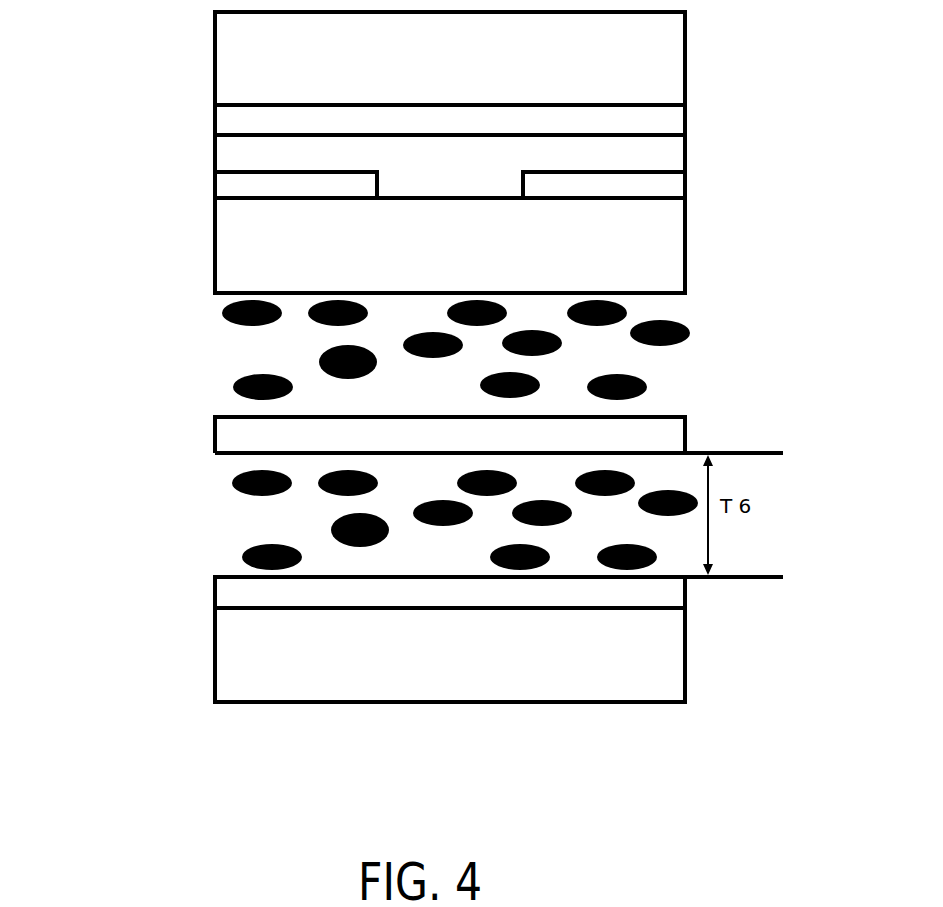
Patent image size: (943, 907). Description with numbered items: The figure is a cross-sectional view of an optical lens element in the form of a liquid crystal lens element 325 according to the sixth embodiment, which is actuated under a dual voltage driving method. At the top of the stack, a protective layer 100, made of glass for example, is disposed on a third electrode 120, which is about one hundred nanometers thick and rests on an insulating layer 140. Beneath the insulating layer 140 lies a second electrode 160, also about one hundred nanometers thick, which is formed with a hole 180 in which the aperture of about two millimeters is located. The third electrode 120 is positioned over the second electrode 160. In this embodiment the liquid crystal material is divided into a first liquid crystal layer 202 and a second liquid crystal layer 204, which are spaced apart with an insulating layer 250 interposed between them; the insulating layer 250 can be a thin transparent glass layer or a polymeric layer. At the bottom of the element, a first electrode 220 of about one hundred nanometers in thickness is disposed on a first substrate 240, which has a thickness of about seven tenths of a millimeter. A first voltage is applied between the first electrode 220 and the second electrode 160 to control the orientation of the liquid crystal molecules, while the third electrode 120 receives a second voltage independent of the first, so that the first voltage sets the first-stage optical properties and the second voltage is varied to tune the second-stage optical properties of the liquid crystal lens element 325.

The protective layer 100 is at (224, 44).
The third electrode 120 is at (224, 128).
The insulating layer 140 is at (224, 158).
The second electrode 160 is at (224, 190).
The hole 180 is at (450, 190).
The first liquid crystal layer 202 is at (235, 347).
The insulating layer 250 is at (215, 430).
The second liquid crystal layer 204 is at (245, 512).
The first electrode 220 is at (224, 586).
The first substrate 240 is at (224, 649).
The liquid crystal lens element 325 is at (827, 739).